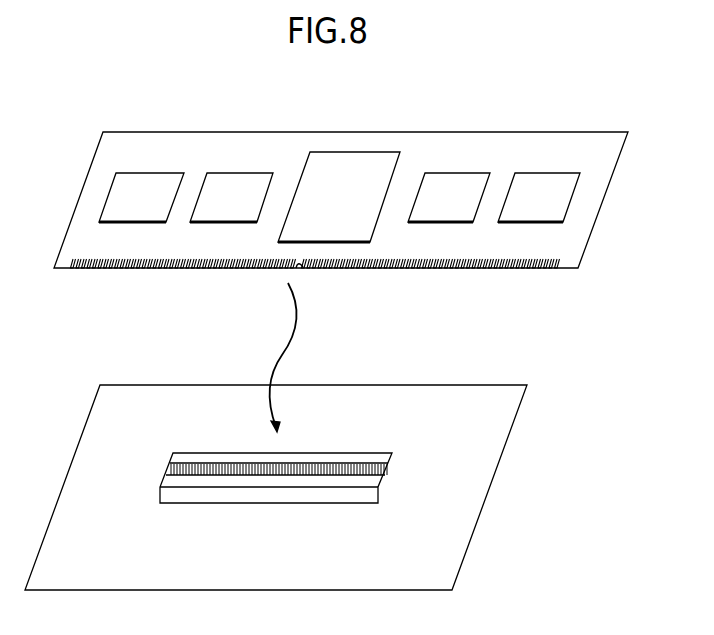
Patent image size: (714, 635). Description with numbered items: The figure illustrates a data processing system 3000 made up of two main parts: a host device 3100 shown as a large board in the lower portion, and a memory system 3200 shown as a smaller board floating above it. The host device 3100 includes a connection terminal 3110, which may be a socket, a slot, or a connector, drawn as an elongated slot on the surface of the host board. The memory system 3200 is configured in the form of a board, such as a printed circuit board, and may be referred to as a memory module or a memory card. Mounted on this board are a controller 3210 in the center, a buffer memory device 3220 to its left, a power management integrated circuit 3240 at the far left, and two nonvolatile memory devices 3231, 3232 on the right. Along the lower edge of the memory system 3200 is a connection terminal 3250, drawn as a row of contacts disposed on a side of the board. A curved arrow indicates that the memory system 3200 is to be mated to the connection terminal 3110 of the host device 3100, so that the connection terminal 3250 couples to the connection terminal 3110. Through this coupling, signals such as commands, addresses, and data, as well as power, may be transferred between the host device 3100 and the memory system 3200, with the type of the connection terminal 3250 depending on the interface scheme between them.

The data processing system 3000 is at (198, 98).
The memory system 3200 is at (341, 219).
The power management integrated circuit 3240 is at (141, 197).
The buffer memory device 3220 is at (231, 197).
The controller 3210 is at (339, 197).
The nonvolatile memory device 3231 is at (449, 197).
The nonvolatile memory device 3232 is at (539, 197).
The connection terminal 3250 is at (90, 269).
The host device 3100 is at (276, 487).
The connection terminal 3110 is at (407, 447).